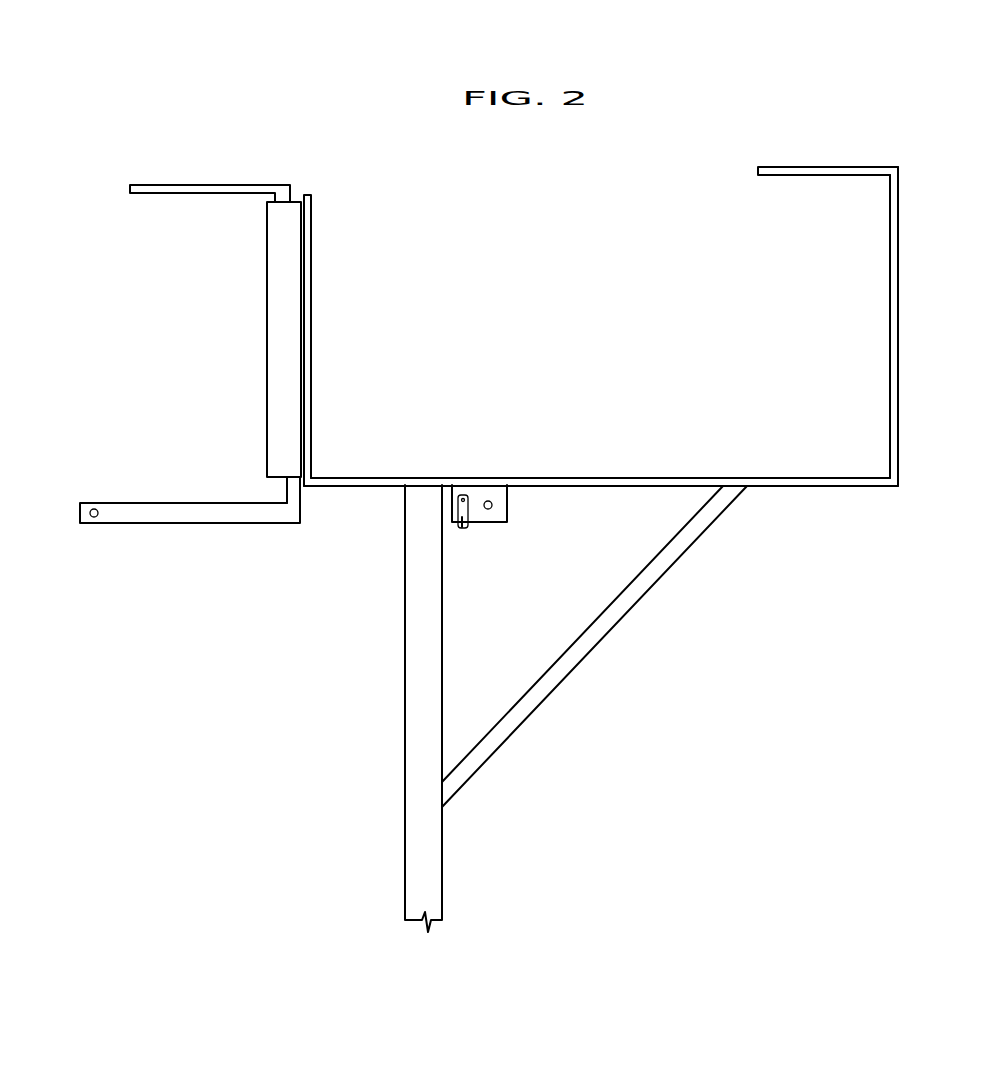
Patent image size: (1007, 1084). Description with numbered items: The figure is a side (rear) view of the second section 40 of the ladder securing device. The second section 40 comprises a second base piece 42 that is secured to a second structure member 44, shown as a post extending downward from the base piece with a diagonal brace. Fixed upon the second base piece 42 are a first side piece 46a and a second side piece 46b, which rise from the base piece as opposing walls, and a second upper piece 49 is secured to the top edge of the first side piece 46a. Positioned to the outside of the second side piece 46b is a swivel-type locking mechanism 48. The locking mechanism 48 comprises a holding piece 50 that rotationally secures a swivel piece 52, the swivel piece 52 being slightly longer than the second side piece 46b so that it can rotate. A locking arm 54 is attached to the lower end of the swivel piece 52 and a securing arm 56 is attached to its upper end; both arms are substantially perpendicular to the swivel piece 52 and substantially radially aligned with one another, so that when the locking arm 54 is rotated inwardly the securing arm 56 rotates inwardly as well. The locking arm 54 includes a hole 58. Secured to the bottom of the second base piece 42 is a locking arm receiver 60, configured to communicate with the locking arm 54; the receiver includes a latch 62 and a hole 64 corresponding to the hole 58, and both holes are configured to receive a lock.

The second section 40 is at (656, 646).
The second base piece 42 is at (798, 478).
The second structure member 44 is at (422, 728).
The first side piece 46a is at (907, 308).
The second side piece 46b is at (312, 340).
The locking mechanism 48 is at (248, 282).
The second upper piece 49 is at (827, 167).
The holding piece 50 is at (280, 400).
The swivel piece 52 is at (292, 497).
The locking arm 54 is at (170, 513).
The securing arm 56 is at (213, 185).
The hole 58 is at (94, 518).
The locking arm receiver 60 is at (533, 504).
The latch 62 is at (462, 528).
The hole 64 is at (488, 510).